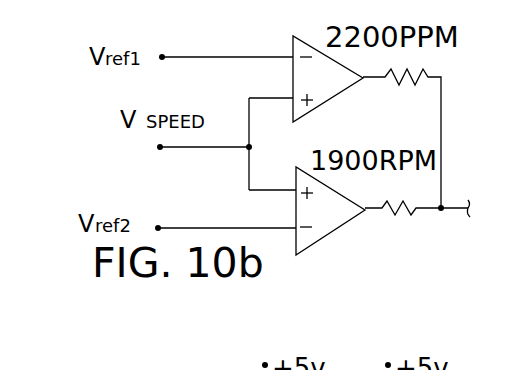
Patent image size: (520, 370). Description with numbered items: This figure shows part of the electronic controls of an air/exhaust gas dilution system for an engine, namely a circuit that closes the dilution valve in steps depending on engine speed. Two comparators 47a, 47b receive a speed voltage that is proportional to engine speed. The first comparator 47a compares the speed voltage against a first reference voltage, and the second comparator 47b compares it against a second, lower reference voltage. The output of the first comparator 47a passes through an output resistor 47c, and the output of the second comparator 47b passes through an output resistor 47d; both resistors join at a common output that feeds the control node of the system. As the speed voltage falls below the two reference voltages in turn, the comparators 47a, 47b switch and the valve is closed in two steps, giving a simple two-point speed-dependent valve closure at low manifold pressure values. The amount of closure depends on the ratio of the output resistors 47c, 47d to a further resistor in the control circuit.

The comparator 47a is at (328, 79).
The comparator 47b is at (330, 211).
The output resistor 47c is at (402, 138).
The output resistor 47d is at (417, 223).